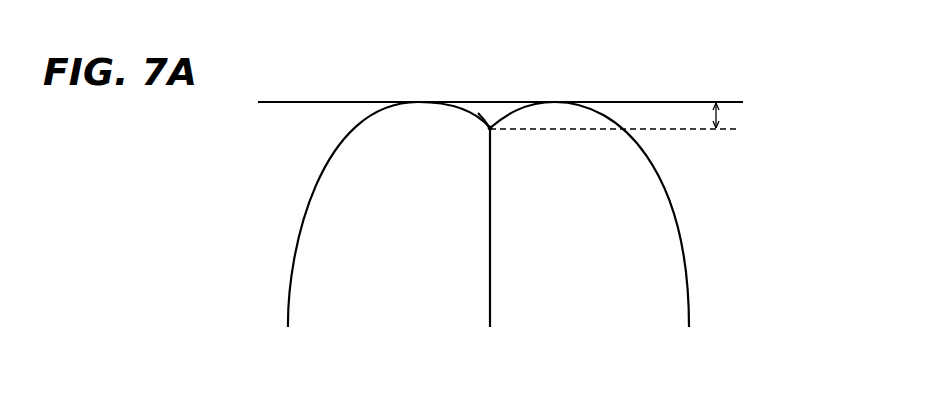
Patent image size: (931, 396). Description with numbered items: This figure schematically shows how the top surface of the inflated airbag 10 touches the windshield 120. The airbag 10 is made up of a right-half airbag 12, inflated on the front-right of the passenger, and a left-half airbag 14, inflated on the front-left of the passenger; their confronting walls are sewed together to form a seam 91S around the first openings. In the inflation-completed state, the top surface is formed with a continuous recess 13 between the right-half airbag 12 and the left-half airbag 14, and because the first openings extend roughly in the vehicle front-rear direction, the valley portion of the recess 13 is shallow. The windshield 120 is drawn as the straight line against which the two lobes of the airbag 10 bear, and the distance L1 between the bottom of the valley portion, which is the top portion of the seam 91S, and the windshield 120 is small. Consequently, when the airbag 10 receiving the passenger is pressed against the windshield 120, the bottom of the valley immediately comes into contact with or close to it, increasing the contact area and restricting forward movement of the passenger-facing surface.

The airbag 10 is at (697, 232).
The windshield 120 is at (288, 103).
The recess 13 is at (493, 121).
The seam 91S is at (489, 128).
The left-half airbag 14 is at (403, 248).
The right-half airbag 12 is at (591, 240).
The distance L1 is at (619, 116).